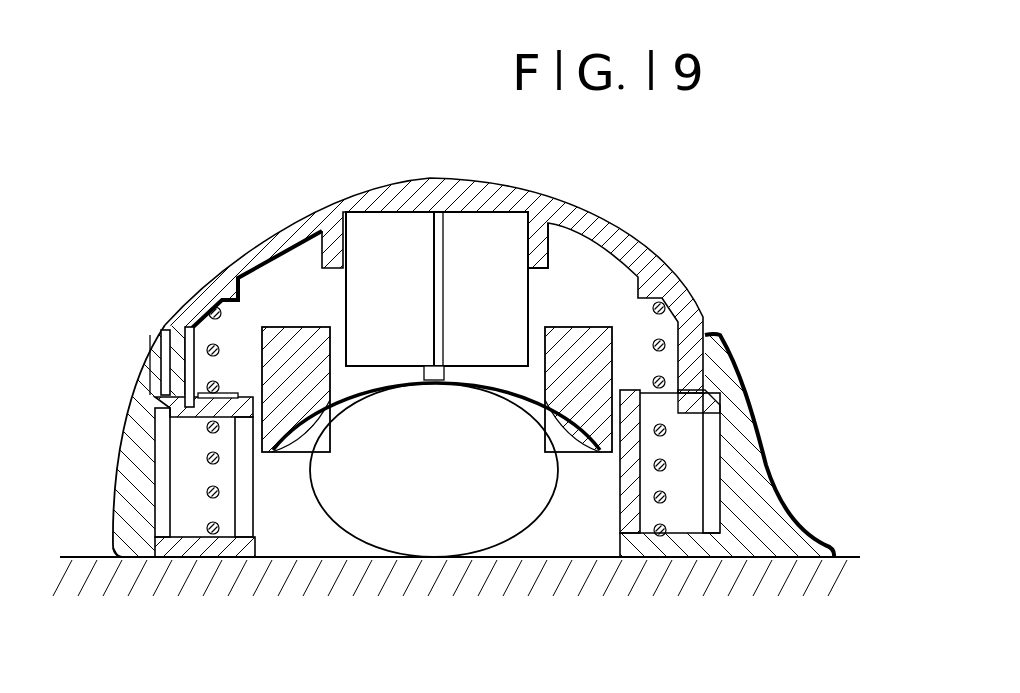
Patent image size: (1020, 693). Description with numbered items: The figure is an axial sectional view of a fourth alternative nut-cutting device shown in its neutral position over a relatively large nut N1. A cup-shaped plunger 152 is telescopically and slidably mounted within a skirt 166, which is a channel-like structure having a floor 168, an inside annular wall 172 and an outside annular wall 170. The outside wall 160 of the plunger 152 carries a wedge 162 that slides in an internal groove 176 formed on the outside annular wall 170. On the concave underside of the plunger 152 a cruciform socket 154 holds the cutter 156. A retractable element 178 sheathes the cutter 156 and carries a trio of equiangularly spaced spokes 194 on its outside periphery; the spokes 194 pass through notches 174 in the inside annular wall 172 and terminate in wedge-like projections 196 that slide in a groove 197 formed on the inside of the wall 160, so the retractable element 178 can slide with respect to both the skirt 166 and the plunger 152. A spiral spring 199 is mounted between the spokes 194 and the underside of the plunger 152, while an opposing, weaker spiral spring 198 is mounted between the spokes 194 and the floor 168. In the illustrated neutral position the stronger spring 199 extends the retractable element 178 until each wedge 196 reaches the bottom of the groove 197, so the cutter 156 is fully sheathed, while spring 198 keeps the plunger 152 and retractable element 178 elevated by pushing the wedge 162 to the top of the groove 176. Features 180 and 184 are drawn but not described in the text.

The plunger 152 is at (425, 178).
The cruciform socket 154 is at (585, 235).
The cutter 156 is at (473, 255).
The outside wall 160 is at (166, 330).
The wedge 162 is at (165, 415).
The skirt 166 is at (106, 503).
The floor 168 is at (208, 557).
The outside annular wall 170 is at (130, 452).
The inside annular wall 172 is at (605, 450).
The notches 174 is at (270, 520).
The internal groove 176 is at (760, 470).
The retractable element 178 is at (578, 440).
The left support block 180 is at (300, 440).
The inner liner 184 is at (300, 262).
The spokes 194 is at (233, 395).
The wedge-like projections 196 is at (178, 385).
The groove 197 is at (212, 310).
The spiral spring 198 is at (212, 525).
The spiral spring 199 is at (228, 335).
The nut N1 is at (467, 540).